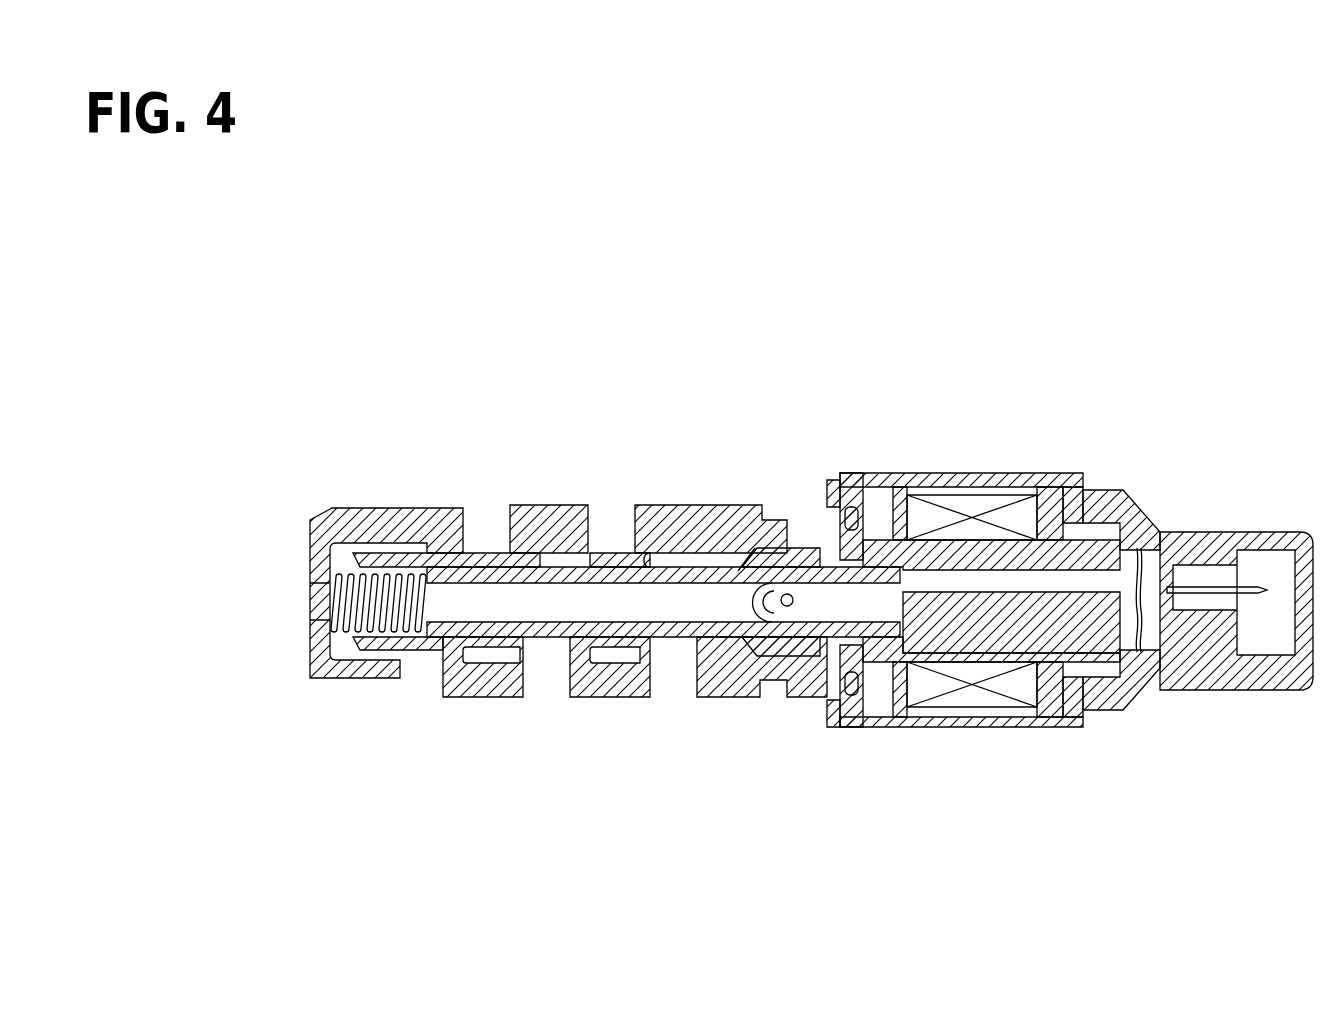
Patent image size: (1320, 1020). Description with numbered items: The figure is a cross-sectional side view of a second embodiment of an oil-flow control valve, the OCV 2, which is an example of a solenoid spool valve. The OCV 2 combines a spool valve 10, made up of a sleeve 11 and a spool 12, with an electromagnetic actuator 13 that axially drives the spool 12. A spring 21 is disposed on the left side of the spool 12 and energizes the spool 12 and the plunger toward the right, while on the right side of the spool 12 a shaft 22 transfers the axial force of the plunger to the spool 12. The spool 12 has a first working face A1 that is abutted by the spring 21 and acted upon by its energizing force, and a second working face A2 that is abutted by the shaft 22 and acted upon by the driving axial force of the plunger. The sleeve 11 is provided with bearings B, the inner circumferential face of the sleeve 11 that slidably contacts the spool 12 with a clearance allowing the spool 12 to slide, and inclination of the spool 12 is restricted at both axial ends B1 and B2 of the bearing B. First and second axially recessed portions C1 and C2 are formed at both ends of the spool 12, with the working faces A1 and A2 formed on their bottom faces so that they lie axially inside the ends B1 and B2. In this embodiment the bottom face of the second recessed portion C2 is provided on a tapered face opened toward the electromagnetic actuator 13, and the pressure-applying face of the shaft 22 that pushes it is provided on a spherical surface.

The OCV 2 is at (542, 362).
The spool valve 10 is at (328, 424).
The electromagnetic actuator 13 is at (1313, 425).
The sleeve 11 is at (550, 510).
The spool 12 is at (617, 553).
The spring 21 is at (312, 680).
The shaft 22 is at (876, 728).
The axial end of the bearing B1 is at (380, 550).
The bearing B is at (412, 552).
The axial end of the bearing B2 is at (787, 553).
The first working face A1 is at (415, 652).
The second working face A2 is at (737, 615).
The first recessed portion C1 is at (377, 655).
The second recessed portion C2 is at (798, 640).